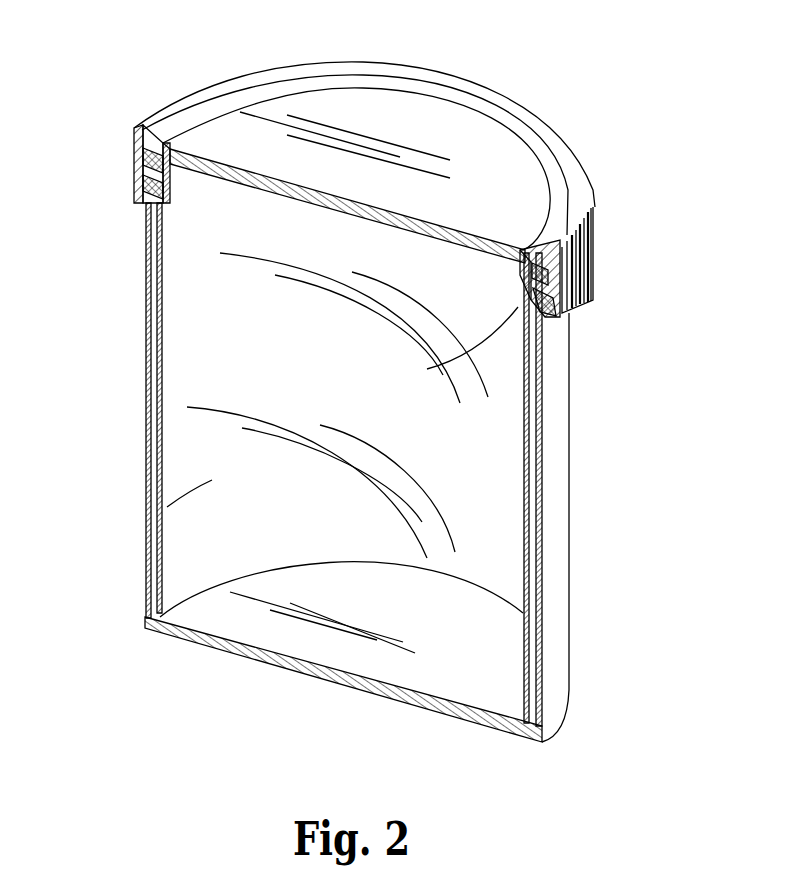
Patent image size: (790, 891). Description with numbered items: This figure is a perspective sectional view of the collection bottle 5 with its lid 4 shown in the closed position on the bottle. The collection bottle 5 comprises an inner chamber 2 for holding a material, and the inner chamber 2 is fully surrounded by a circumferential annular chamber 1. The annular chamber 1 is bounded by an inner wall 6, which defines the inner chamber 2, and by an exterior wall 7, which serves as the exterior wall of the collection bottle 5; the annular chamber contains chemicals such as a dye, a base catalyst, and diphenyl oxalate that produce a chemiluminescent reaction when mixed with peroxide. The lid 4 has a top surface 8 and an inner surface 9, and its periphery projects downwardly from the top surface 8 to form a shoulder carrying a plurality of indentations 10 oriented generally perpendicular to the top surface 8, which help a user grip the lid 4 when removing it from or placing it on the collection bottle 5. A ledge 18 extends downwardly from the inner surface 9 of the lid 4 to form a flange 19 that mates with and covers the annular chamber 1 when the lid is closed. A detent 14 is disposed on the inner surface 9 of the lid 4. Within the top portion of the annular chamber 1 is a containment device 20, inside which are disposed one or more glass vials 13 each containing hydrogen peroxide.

The annular chamber 1 is at (155, 435).
The inner chamber 2 is at (157, 508).
The lid 4 is at (308, 70).
The collection bottle 5 is at (320, 672).
The inner wall 6 is at (167, 383).
The exterior wall 7 is at (146, 305).
The top surface 8 is at (273, 112).
The inner surface 9 is at (405, 214).
The indentations 10 is at (597, 247).
The glass vials 13 is at (150, 158).
The detent 14 is at (527, 257).
The ledge 18 is at (187, 178).
The flange 19 is at (452, 359).
The containment device 20 is at (137, 176).